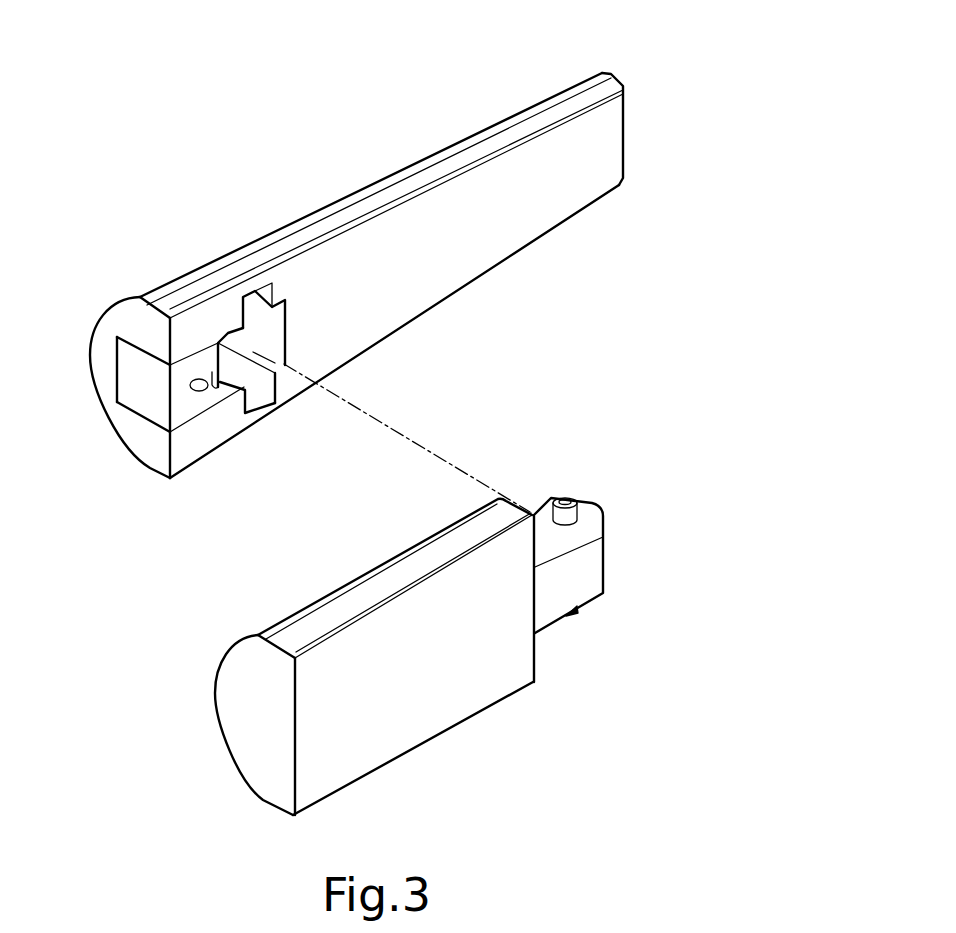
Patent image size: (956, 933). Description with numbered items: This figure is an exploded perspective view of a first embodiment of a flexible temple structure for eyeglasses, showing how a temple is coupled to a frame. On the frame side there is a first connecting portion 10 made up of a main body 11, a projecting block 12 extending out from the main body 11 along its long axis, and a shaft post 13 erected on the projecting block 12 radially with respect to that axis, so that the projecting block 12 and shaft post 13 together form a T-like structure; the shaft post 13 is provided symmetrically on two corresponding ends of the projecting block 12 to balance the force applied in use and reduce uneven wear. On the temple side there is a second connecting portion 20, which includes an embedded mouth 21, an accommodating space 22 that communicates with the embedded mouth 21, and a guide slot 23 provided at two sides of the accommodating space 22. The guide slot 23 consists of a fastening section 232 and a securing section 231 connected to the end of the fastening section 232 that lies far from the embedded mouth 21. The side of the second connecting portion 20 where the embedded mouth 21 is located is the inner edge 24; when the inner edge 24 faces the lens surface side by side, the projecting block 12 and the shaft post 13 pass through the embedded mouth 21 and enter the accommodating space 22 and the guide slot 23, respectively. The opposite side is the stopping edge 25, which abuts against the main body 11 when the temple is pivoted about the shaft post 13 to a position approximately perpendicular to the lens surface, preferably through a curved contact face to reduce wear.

The first connecting portion 10 is at (422, 610).
The main body 11 is at (515, 667).
The projecting block 12 is at (592, 565).
The shaft post 13 is at (566, 498).
The second connecting portion 20 is at (332, 316).
The embedded mouth 21 is at (287, 333).
The accommodating space 22 is at (133, 368).
The guide slot 23 is at (243, 452).
The securing section 231 is at (218, 382).
The fastening section 232 is at (206, 387).
The inner edge 24 is at (495, 225).
The stopping edge 25 is at (117, 323).